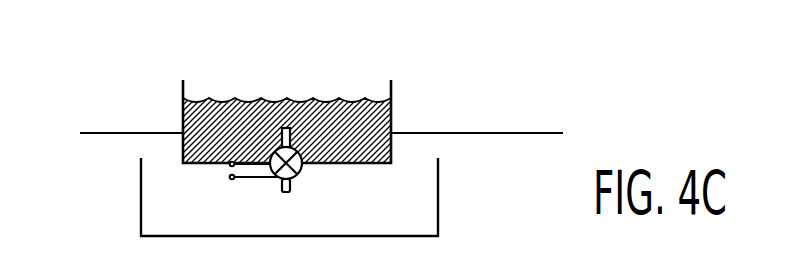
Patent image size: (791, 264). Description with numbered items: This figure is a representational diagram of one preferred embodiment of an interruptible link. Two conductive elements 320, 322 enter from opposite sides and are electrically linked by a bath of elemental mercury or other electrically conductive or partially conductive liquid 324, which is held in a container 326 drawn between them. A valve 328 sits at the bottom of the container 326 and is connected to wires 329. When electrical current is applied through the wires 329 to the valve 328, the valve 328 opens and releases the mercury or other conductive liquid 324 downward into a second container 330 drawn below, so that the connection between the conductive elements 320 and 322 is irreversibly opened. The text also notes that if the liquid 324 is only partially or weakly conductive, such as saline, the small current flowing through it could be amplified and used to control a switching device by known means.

The conductive element 320 is at (102, 133).
The conductive element 322 is at (492, 133).
The electrically conductive liquid 324 is at (268, 110).
The container 326 is at (392, 87).
The valve 328 is at (302, 164).
The wires 329 is at (232, 170).
The container 330 is at (440, 208).